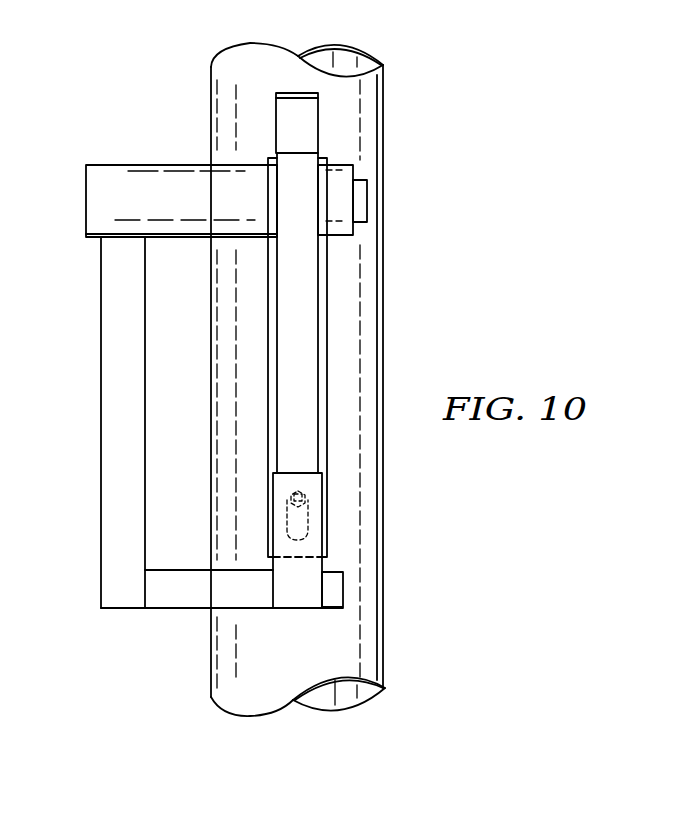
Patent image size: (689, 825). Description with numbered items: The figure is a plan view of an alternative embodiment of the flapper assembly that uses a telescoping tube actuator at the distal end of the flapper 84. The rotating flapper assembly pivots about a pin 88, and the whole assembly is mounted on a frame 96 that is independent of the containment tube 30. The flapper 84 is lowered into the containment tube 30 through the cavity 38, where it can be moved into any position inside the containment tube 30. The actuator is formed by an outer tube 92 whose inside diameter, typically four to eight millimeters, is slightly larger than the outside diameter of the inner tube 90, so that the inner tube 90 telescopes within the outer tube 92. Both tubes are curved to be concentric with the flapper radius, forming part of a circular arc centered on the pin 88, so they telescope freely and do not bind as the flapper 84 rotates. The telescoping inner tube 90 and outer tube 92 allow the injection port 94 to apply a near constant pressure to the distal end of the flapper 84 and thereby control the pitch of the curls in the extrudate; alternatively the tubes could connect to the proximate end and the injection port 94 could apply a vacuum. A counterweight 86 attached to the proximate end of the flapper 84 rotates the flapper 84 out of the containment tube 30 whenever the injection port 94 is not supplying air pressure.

The containment tube 30 is at (383, 118).
The cavity 38 is at (270, 352).
The flapper 84 is at (288, 423).
The counterweight 86 is at (297, 108).
The pin 88 is at (163, 163).
The inner tube 90 is at (306, 494).
The outer tube 92 is at (308, 525).
The injection port 94 is at (303, 473).
The frame 96 is at (101, 360).